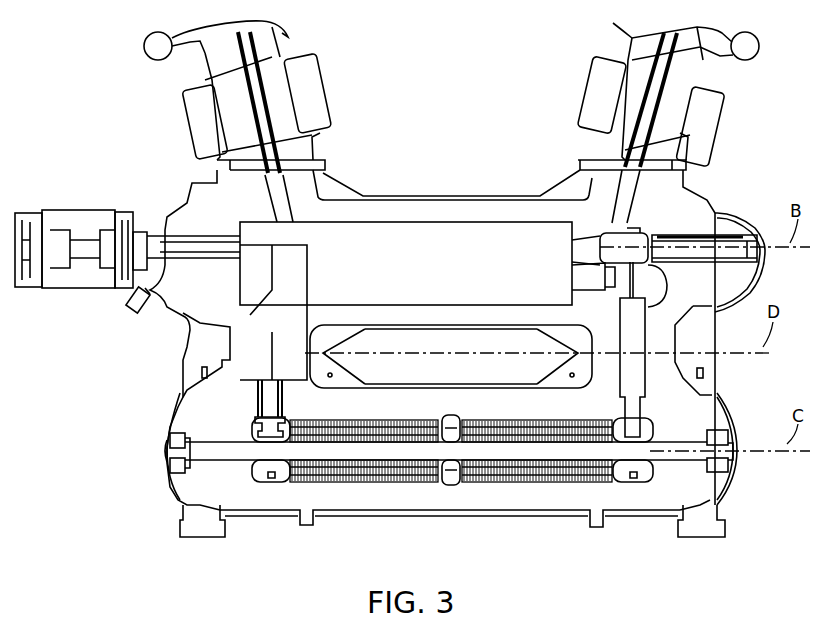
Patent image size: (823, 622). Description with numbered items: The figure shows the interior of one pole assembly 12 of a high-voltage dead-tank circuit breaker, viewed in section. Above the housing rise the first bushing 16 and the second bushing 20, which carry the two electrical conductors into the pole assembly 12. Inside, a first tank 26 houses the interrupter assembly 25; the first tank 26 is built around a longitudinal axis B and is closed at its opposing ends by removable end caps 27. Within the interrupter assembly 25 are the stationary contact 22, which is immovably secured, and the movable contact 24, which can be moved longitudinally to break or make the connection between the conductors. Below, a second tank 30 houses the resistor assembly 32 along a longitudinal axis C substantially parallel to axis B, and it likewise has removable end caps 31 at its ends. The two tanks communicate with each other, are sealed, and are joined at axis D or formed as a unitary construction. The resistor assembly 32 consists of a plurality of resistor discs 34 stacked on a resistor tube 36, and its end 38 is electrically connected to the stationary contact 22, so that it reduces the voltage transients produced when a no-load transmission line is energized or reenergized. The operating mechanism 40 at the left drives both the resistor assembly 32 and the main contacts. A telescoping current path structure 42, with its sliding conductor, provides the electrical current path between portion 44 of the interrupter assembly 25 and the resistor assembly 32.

The pole assembly 12 is at (457, 192).
The first bushing 16 is at (618, 43).
The second bushing 20 is at (197, 63).
The stationary contact 22 is at (270, 340).
The movable contact 24 is at (270, 293).
The interrupter assembly 25 is at (425, 277).
The first tank 26 is at (692, 307).
The removable end caps 27 is at (170, 207).
The second tank 30 is at (712, 423).
The removable end caps 31 is at (170, 480).
The resistor assembly 32 is at (421, 492).
The resistor discs 34 is at (545, 484).
The resistor tube 36 is at (352, 455).
The end of the resistor assembly 38 is at (287, 410).
The operating mechanism 40 is at (85, 213).
The current path structure 42 is at (645, 395).
The portion of the interrupter assembly 44 is at (650, 275).